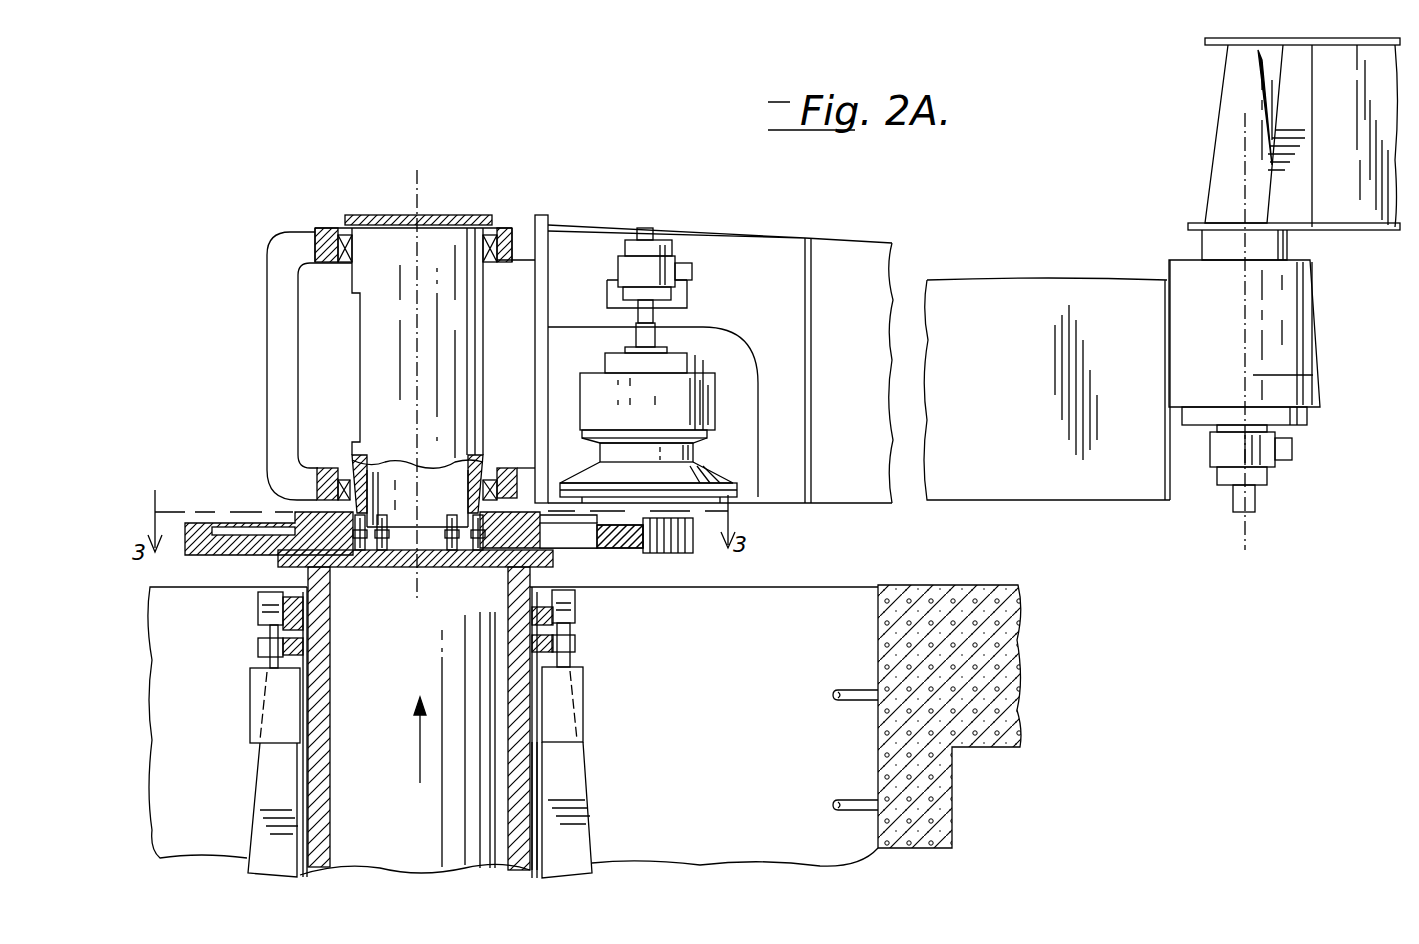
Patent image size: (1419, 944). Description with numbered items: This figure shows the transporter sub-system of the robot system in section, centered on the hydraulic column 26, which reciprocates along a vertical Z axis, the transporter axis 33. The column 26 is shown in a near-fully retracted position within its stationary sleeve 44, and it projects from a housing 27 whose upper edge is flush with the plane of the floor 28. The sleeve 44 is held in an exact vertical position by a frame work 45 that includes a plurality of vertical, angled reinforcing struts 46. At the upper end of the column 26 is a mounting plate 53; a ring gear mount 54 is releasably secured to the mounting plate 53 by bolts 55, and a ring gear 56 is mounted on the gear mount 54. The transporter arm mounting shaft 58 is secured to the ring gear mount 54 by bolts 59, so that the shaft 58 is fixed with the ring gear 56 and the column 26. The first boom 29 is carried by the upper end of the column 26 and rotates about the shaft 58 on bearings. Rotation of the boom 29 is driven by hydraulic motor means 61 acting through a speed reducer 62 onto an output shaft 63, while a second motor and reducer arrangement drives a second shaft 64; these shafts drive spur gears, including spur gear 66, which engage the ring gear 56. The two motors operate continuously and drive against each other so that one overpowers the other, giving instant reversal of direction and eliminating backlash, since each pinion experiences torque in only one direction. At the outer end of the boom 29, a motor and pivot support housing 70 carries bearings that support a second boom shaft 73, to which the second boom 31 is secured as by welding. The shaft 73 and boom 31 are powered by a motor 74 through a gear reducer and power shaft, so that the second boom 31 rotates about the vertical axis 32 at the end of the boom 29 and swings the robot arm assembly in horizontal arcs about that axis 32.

The hydraulic column 26 is at (410, 860).
The housing 27 is at (878, 830).
The floor 28 is at (972, 583).
The first boom 29 is at (887, 258).
The second boom 31 is at (1355, 218).
The vertical axis 32 is at (1247, 530).
The transporter axis 33 is at (418, 195).
The sleeve 44 is at (322, 832).
The frame work 45 is at (537, 797).
The reinforcing struts 46 is at (257, 815).
The mounting plate 53 is at (553, 557).
The ring gear mount 54 is at (257, 553).
The bolts 55 is at (383, 567).
The ring gear 56 is at (627, 547).
The transporter arm mounting shaft 58 is at (470, 357).
The bolts 59 is at (357, 568).
The hydraulic motor means 61 is at (663, 242).
The speed reducer 62 is at (717, 397).
The output shaft 63 is at (673, 500).
The second shaft 64 is at (627, 500).
The spur gear 66 is at (677, 553).
The motor and pivot support housing 70 is at (1312, 338).
The second boom shaft 73 is at (1217, 182).
The motor 74 is at (1270, 470).